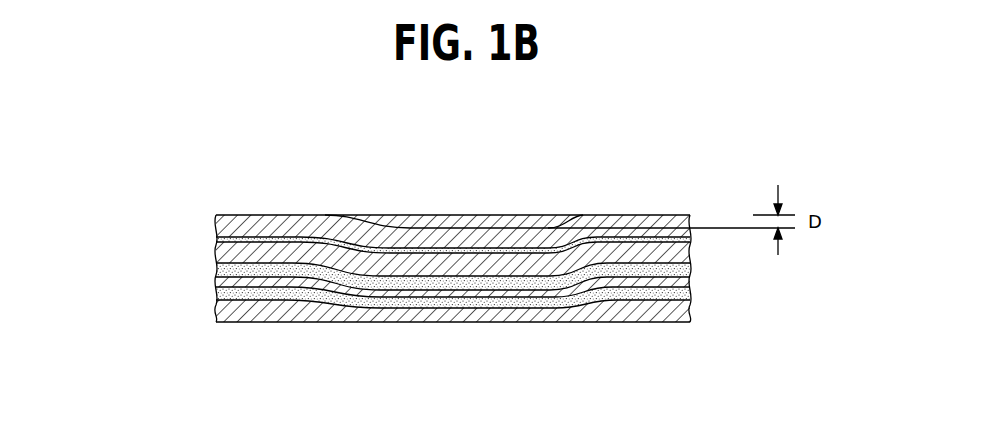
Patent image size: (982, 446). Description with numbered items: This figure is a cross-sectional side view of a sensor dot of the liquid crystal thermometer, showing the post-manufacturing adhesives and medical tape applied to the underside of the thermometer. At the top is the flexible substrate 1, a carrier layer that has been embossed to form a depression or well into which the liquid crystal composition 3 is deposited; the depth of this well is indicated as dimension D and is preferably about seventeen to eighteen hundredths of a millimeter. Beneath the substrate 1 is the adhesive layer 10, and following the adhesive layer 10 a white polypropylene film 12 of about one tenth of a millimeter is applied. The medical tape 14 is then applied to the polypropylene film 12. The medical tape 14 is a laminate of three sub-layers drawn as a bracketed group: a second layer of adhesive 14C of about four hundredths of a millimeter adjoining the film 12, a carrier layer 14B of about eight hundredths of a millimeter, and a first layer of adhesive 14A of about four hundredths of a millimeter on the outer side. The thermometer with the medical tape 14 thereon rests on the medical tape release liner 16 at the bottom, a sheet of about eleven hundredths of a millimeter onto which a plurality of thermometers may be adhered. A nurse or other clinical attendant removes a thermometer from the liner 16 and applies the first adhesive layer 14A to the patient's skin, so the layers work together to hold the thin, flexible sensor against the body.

The flexible substrate 1 is at (240, 232).
The liquid crystal composition 3 is at (373, 216).
The adhesive layer 10 is at (217, 238).
The white polypropylene film 12 is at (217, 253).
The medical tape 14 is at (475, 342).
The first layer of adhesive 14A is at (313, 302).
The carrier layer 14B is at (398, 297).
The second layer of adhesive 14C is at (470, 284).
The medical tape release liner 16 is at (227, 310).